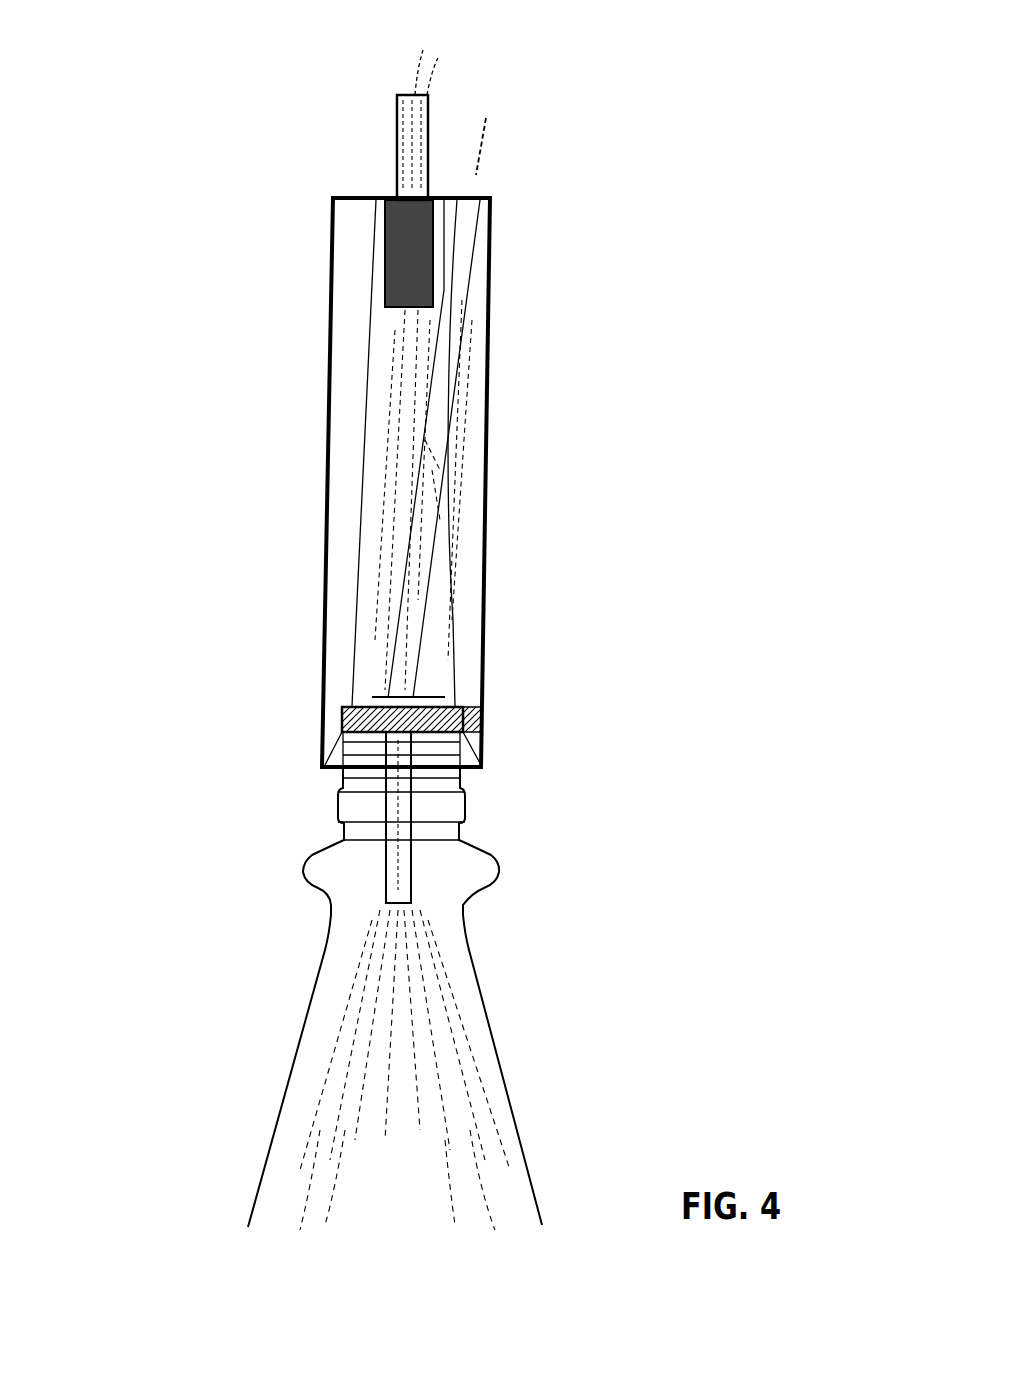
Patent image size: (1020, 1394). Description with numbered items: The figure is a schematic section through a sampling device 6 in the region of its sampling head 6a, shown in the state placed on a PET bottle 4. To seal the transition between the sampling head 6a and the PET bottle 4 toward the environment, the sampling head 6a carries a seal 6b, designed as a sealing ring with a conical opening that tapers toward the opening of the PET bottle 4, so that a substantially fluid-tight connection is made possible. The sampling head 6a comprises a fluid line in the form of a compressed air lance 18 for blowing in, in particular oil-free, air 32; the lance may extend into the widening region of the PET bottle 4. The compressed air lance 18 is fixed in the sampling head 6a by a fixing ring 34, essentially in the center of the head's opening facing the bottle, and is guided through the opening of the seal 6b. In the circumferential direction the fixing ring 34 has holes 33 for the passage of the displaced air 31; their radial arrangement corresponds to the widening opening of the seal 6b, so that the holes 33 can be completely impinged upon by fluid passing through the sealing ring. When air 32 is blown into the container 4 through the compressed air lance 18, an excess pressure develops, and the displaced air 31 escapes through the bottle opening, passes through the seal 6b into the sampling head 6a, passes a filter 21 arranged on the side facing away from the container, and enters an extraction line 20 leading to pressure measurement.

The PET bottle 4 is at (502, 1058).
The sampling device 6 is at (418, 463).
The sampling head 6a is at (597, 422).
The seal 6b is at (466, 720).
The compressed air lance 18 is at (410, 879).
The extraction line 20 is at (392, 138).
The filter 21 is at (430, 240).
The displaced air 31 is at (432, 95).
The air 32 is at (497, 157).
The holes 33 is at (444, 698).
The fixing ring 34 is at (456, 700).